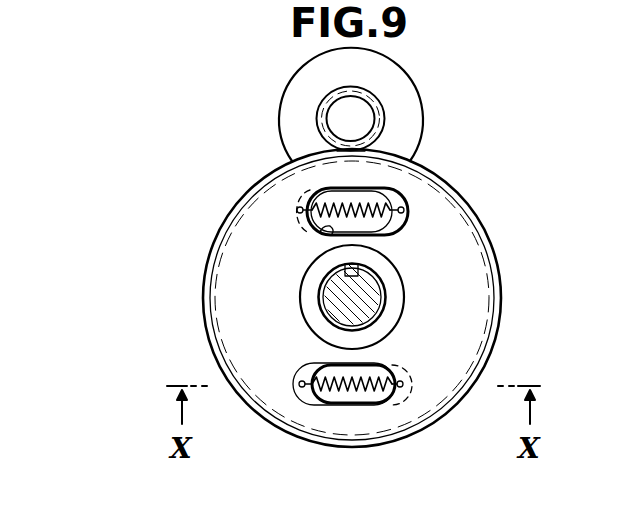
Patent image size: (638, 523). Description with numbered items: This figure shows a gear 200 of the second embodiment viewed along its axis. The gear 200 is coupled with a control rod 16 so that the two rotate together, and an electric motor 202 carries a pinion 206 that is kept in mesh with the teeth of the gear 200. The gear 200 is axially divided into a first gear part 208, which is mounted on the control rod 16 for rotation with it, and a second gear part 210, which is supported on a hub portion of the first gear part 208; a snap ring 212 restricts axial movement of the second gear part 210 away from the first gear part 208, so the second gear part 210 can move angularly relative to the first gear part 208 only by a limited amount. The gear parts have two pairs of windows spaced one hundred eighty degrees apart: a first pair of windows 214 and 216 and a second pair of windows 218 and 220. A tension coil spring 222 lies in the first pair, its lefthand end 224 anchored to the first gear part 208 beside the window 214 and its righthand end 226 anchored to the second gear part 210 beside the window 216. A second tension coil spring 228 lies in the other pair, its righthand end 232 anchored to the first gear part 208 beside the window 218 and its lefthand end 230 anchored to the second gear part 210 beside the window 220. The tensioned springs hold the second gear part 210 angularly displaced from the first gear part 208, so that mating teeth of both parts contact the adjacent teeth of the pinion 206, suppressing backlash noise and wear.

The gear 200 is at (184, 281).
The electric motor 202 is at (290, 85).
The pinion 206 is at (362, 112).
The first gear part 208 is at (455, 237).
The second gear part 210 is at (423, 305).
The snap ring 212 is at (320, 312).
The control rod 16 is at (330, 296).
The window 218 is at (300, 197).
The window 220 is at (312, 232).
The tension coil spring 228 is at (398, 185).
The lefthand end 230 is at (297, 210).
The righthand end 232 is at (405, 209).
The lefthand end 224 is at (298, 398).
The window 216 is at (336, 402).
The tension coil spring 222 is at (362, 395).
The window 214 is at (397, 400).
The righthand end 226 is at (403, 388).